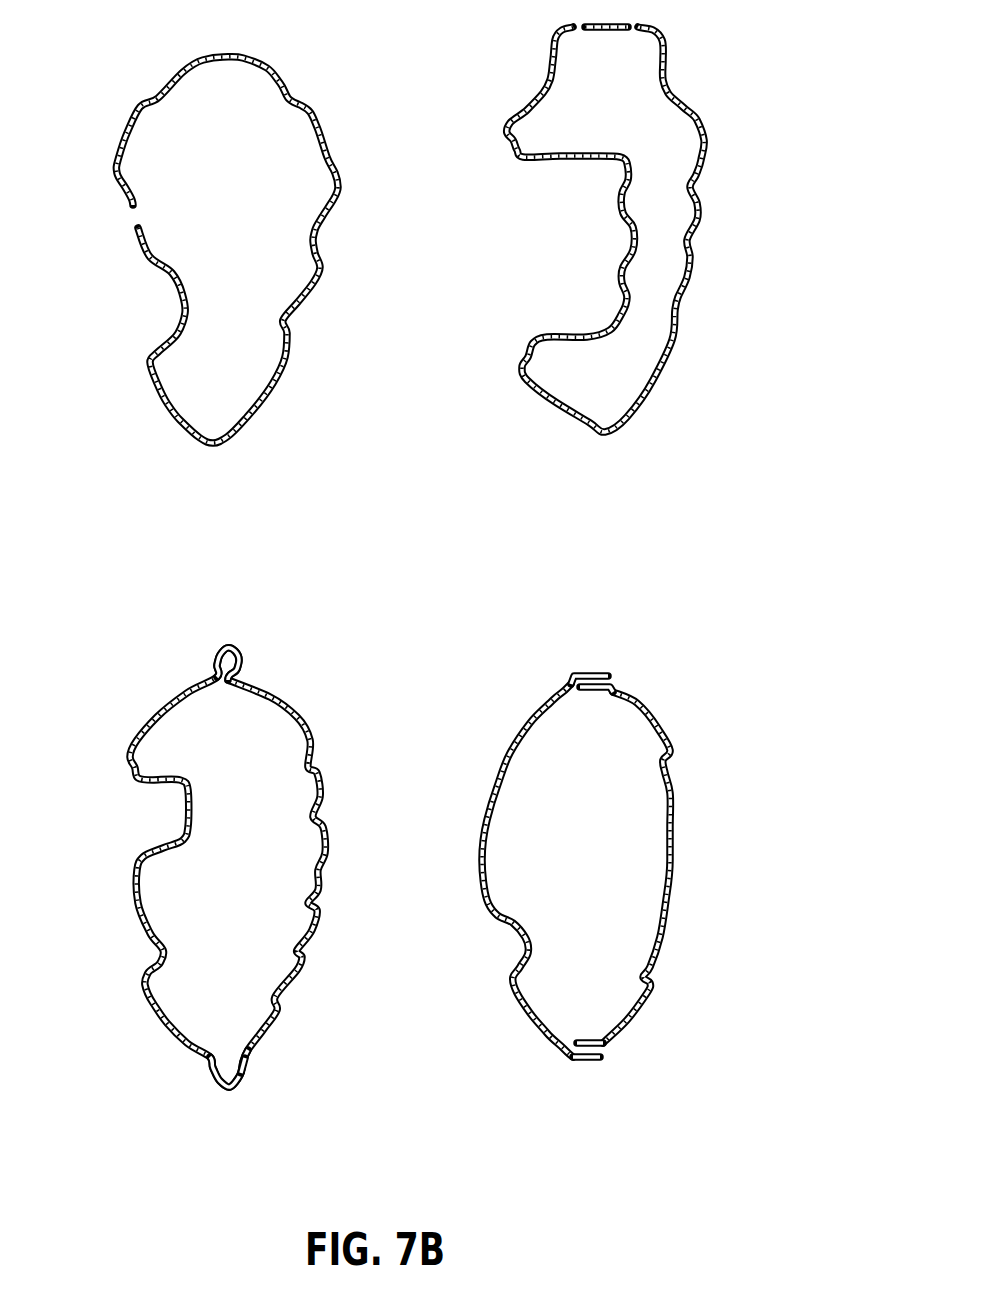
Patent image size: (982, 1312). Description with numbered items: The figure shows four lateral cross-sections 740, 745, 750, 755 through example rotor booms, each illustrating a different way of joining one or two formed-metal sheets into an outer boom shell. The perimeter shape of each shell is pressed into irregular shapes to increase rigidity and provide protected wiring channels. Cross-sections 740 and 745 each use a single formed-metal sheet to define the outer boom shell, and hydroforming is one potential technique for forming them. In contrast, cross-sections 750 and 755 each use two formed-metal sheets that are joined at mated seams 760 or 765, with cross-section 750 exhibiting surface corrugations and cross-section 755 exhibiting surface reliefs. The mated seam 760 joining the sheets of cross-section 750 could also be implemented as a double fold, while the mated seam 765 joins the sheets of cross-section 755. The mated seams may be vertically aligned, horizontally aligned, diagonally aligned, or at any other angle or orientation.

The lateral cross-section 740 is at (210, 170).
The lateral cross-section 745 is at (596, 120).
The lateral cross-section 750 is at (222, 878).
The lateral cross-section 755 is at (570, 850).
The mated seam 760 is at (262, 651).
The mated seam 765 is at (606, 655).